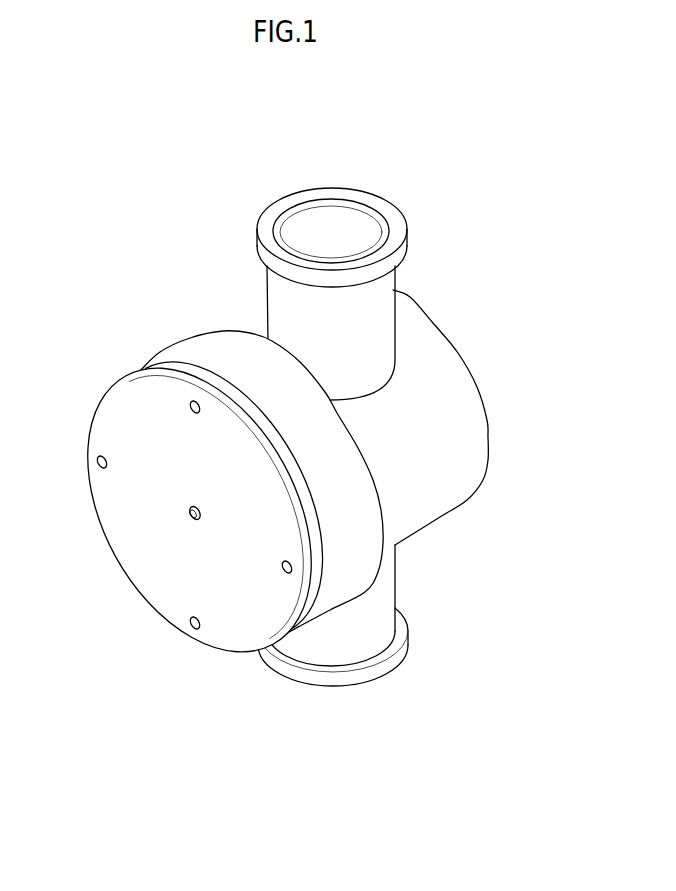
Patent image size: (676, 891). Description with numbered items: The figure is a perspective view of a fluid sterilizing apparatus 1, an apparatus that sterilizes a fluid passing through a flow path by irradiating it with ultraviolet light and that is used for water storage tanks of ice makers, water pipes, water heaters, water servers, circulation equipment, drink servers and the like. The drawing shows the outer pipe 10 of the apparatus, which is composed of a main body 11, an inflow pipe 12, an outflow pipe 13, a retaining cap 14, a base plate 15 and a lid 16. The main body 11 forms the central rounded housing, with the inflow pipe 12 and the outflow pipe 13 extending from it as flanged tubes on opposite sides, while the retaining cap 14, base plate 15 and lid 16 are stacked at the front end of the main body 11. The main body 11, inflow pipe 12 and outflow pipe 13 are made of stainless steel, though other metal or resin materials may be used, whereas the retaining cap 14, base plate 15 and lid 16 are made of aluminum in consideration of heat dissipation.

The fluid sterilizing apparatus 1 is at (304, 434).
The outer pipe 10 is at (346, 434).
The main body 11 is at (484, 440).
The inflow pipe 12 is at (365, 681).
The outflow pipe 13 is at (312, 189).
The retaining cap 14 is at (183, 352).
The base plate 15 is at (148, 368).
The lid 16 is at (112, 527).